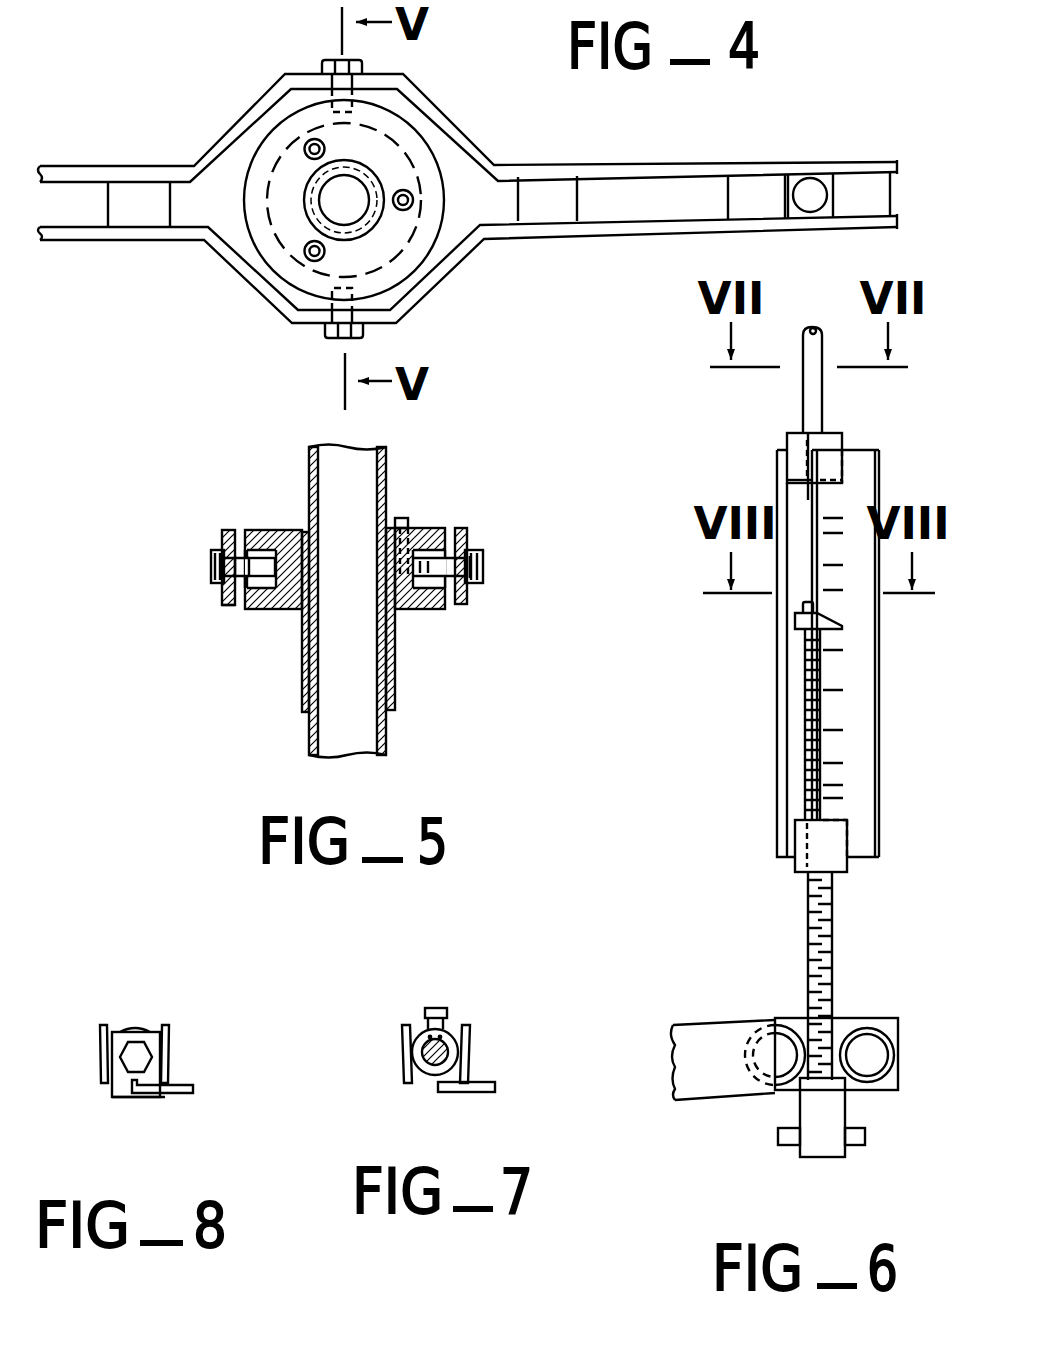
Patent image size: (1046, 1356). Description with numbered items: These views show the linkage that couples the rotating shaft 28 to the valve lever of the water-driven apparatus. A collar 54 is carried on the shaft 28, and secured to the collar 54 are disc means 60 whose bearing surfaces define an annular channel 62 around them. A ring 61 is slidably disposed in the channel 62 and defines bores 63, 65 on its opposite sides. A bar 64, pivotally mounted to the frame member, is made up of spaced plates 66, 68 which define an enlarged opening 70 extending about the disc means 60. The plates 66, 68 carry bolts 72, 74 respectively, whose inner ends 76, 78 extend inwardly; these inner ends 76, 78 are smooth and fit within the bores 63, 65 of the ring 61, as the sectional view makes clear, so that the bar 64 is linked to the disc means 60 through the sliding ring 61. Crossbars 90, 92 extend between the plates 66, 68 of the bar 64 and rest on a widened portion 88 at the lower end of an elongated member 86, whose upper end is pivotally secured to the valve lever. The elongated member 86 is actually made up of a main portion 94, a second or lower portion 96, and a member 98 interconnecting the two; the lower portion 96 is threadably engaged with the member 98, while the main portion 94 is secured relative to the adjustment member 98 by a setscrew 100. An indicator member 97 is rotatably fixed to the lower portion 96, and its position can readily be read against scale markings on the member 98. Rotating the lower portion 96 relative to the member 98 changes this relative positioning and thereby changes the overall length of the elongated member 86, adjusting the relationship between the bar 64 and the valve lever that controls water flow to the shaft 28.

In FIG. 4, the shaft 28 is at (377, 178).
In FIG. 5, the shaft 28 is at (384, 470).
In FIG. 5, the collar 54 is at (299, 695).
In FIG. 4, the disc means 60 is at (296, 274).
In FIG. 5, the disc means 60 is at (429, 525).
In FIG. 5, the ring 61 is at (269, 541).
In FIG. 4, the annular channel 62 is at (401, 252).
In FIG. 5, the annular channel 62 is at (255, 588).
In FIG. 5, the bore 63 is at (212, 560).
In FIG. 4, the bar 64 is at (123, 243).
In FIG. 5, the bar 64 is at (219, 527).
In FIG. 5, the bore 65 is at (467, 553).
In FIG. 4, the plate 66 is at (218, 272).
In FIG. 5, the plate 66 is at (226, 611).
In FIG. 4, the plate 68 is at (271, 84).
In FIG. 5, the plate 68 is at (471, 534).
In FIG. 4, the enlarged opening 70 is at (449, 229).
In FIG. 4, the bolt 72 is at (335, 349).
In FIG. 5, the bolt 72 is at (207, 579).
In FIG. 4, the bolt 74 is at (321, 59).
In FIG. 5, the bolt 74 is at (487, 565).
In FIG. 4, the inner end 76 is at (361, 110).
In FIG. 5, the inner end 76 is at (254, 564).
In FIG. 4, the inner end 78 is at (330, 309).
In FIG. 5, the inner end 78 is at (436, 570).
In FIG. 6, the elongated member 86 is at (801, 408).
In FIG. 6, the widened portion 88 is at (845, 1110).
In FIG. 4, the crossbar 90 is at (757, 188).
In FIG. 6, the crossbar 90 is at (787, 1024).
In FIG. 4, the crossbar 92 is at (858, 190).
In FIG. 6, the crossbar 92 is at (865, 1023).
In FIG. 6, the main portion 94 is at (816, 333).
In FIG. 6, the lower portion 96 is at (807, 925).
In FIG. 6, the indicator member 97 is at (800, 623).
In FIG. 8, the indicator member 97 is at (150, 1100).
In FIG. 6, the member 98 is at (867, 622).
In FIG. 7, the member 98 is at (470, 1062).
In FIG. 8, the member 98 is at (182, 1093).
In FIG. 7, the setscrew 100 is at (432, 1007).